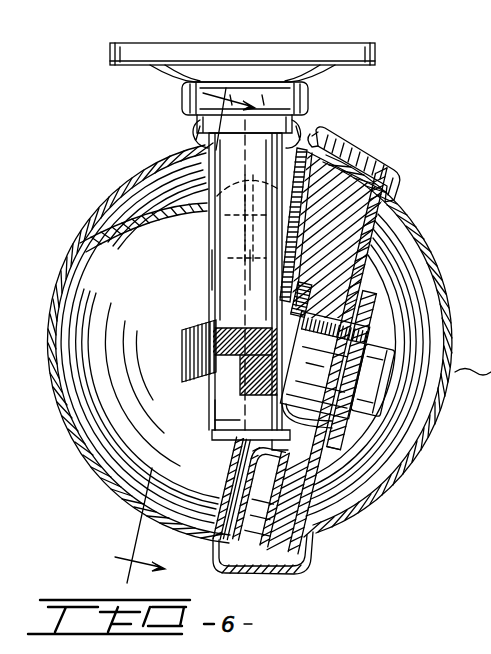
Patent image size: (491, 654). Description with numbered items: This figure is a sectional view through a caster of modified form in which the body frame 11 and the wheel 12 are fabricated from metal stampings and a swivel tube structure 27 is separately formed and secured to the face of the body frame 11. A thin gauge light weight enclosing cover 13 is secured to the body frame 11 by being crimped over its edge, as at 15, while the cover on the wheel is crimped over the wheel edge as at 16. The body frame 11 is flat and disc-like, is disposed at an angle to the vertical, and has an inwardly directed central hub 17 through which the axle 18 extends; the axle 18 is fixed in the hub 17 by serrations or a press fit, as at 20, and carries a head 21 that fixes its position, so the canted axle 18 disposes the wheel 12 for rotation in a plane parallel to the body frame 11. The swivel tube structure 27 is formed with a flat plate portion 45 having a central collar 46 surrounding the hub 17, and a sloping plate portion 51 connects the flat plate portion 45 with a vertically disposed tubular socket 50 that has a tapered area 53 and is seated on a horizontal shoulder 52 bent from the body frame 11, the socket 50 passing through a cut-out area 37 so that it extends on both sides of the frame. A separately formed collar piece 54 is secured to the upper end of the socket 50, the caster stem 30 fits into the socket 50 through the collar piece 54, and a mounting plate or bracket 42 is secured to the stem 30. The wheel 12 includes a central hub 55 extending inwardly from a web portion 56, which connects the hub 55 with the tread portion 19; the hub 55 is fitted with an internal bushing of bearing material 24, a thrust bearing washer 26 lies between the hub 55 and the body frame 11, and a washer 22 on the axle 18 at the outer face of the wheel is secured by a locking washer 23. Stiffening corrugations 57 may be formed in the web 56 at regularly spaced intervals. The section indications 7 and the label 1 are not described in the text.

The valve assembly 1 is at (473, 295).
The section line 7- 7 is at (178, 335).
The body frame 11 is at (230, 503).
The wheel 12 is at (366, 280).
The enclosing cover 13 is at (141, 197).
The crimp 15 is at (392, 192).
The crimp 16 is at (316, 138).
The hub 17 is at (208, 289).
The axle 18 is at (397, 387).
The tread portion 19 is at (362, 164).
The press fit 20 is at (218, 398).
The head 21 is at (200, 332).
The washer 22 is at (373, 327).
The locking washer 23 is at (380, 353).
The bearing material 24 is at (357, 422).
The thrust bearing washer 26 is at (310, 281).
The swivel tube structure 27 is at (207, 266).
The caster stem 30 is at (270, 95).
The cut-out area 37 is at (262, 268).
The mounting plate 42 is at (375, 56).
The flat plate portion 45 is at (230, 443).
The central collar 46 is at (217, 427).
The socket 50 is at (237, 223).
The sloping plate portion 51 is at (290, 212).
The shoulder 52 is at (247, 460).
The tapered area 53 is at (305, 310).
The collar piece 54 is at (297, 128).
The hub 55 is at (279, 443).
The web portion 56 is at (363, 293).
The stiffening corrugations 57 is at (312, 547).